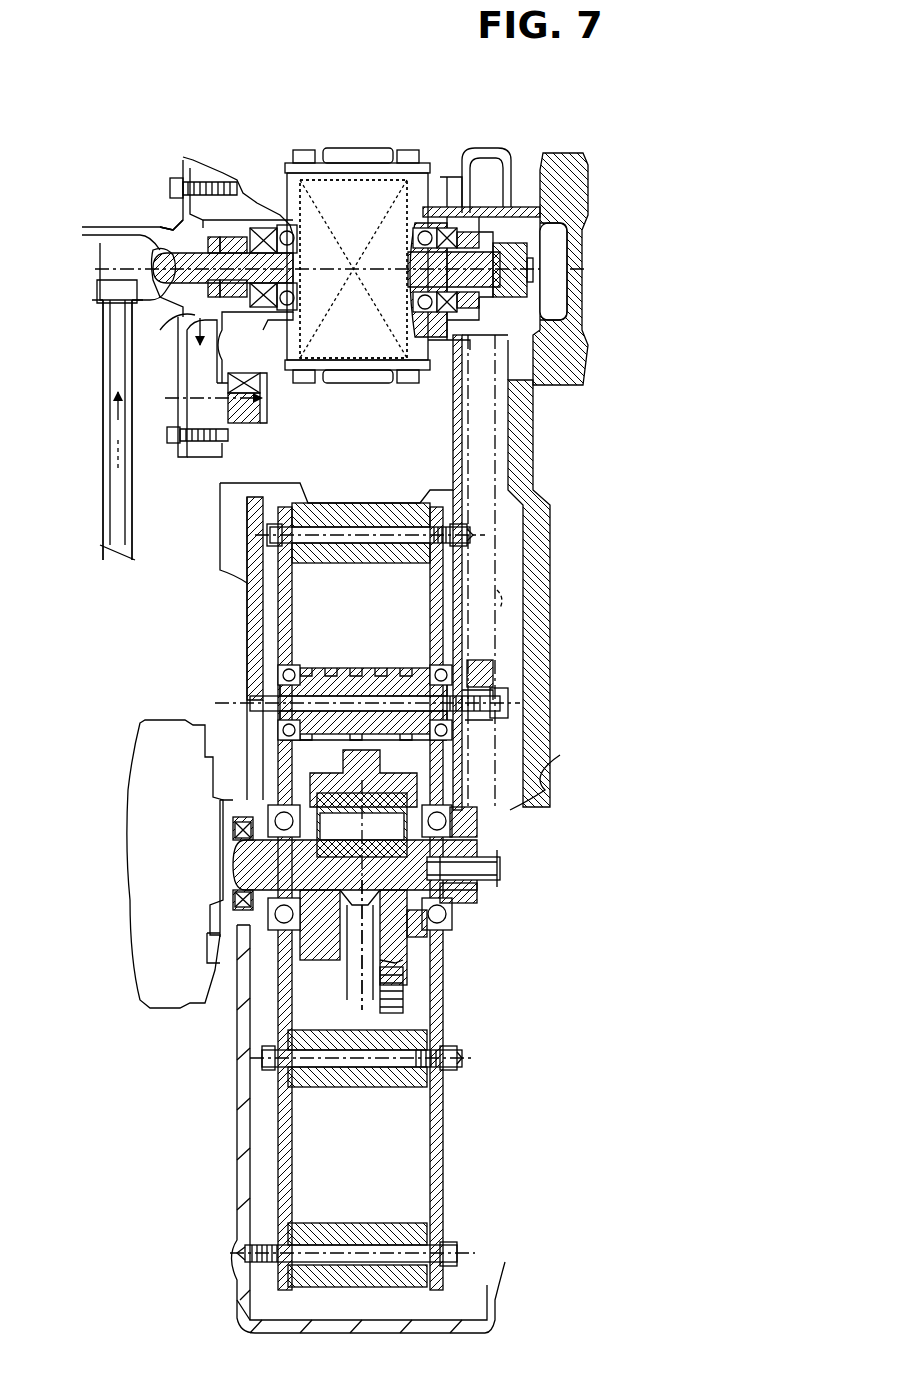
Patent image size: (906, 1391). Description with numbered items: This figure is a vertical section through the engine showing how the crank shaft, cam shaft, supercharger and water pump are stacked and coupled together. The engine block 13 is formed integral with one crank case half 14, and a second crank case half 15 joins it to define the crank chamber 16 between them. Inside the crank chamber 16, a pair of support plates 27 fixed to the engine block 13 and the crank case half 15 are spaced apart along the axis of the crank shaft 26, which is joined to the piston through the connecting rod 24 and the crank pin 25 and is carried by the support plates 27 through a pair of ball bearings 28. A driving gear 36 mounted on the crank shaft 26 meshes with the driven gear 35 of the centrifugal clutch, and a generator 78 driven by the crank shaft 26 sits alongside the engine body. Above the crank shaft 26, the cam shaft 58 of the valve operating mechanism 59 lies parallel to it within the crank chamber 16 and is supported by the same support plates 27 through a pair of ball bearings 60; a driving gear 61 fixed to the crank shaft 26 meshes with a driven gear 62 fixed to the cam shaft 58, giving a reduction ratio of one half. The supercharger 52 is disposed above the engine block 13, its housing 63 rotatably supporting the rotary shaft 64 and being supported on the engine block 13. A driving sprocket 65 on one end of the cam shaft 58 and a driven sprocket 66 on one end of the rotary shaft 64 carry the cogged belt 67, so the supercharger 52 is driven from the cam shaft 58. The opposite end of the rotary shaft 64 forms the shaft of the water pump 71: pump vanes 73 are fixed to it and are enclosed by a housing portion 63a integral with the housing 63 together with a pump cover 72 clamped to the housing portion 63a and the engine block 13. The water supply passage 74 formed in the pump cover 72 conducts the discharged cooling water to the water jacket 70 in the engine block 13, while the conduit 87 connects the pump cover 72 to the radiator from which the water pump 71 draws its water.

The engine block 13 is at (534, 440).
The crank case half 14 is at (543, 550).
The crank case half 15 is at (240, 1172).
The crank chamber 16 is at (385, 1159).
The connecting rod 24 is at (358, 880).
The crank pin 25 is at (310, 800).
The crank shaft 26 is at (245, 865).
The support plates 27 is at (280, 1125).
The ball bearings 28 is at (283, 822).
The driven gear 35 is at (403, 1000).
The driving gear 36 is at (395, 960).
The supercharger 52 is at (375, 336).
The cam shaft 58 is at (395, 665).
The valve operating mechanism 59 is at (355, 665).
The ball bearings 60 is at (280, 672).
The driving gear 61 is at (455, 820).
The driven gear 62 is at (462, 780).
The housing 63 is at (348, 185).
The housing portion 63a is at (250, 200).
The rotary shaft 64 is at (555, 268).
The driving sprocket 65 is at (490, 665).
The driven sprocket 66 is at (478, 245).
The cogged belt 67 is at (525, 604).
The water jacket 70 is at (275, 400).
The water pump 71 is at (172, 222).
The pump cover 72 is at (110, 230).
The pump vanes 73 is at (200, 225).
The water supply passage 74 is at (176, 385).
The generator 78 is at (145, 975).
The conduit 87 is at (110, 490).